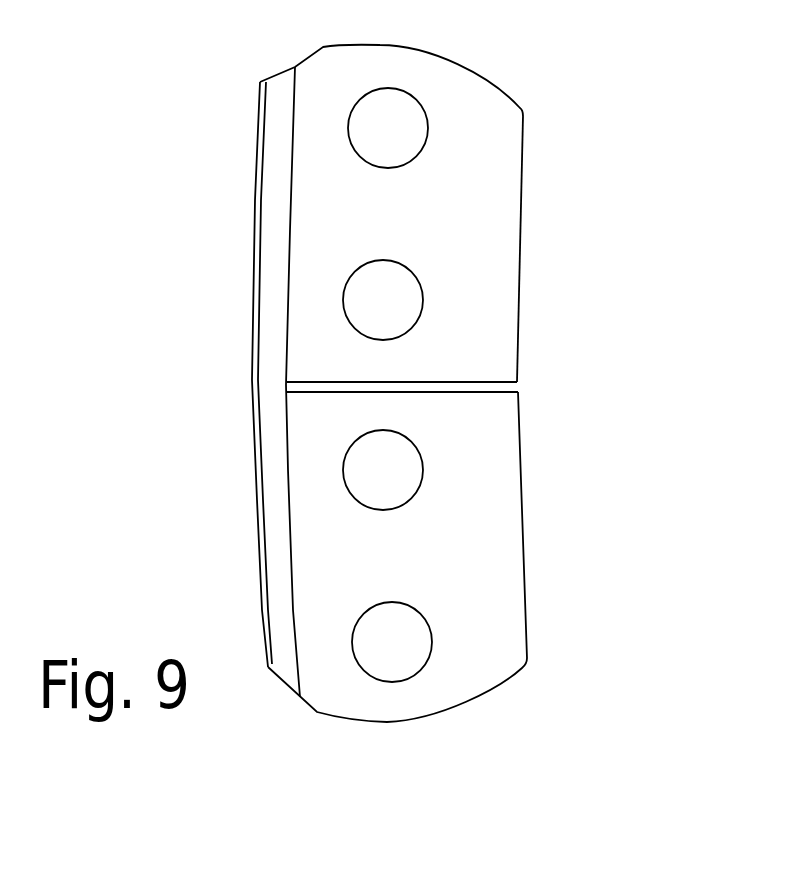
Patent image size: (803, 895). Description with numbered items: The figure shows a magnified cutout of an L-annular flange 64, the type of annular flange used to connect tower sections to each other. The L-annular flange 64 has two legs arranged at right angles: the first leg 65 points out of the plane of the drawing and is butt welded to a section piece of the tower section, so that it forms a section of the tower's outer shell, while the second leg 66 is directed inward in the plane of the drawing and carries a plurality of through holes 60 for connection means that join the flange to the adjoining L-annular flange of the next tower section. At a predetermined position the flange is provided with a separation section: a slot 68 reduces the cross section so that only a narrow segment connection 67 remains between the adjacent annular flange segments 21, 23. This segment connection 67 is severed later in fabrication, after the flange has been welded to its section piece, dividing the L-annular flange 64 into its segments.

The annular flange segment 21 is at (225, 486).
The annular flange segment 23 is at (228, 141).
The through holes 60 is at (365, 283).
The L-annular flange 64 is at (528, 432).
The first leg 65 is at (277, 197).
The second leg 66 is at (495, 143).
The segment connection 67 is at (278, 385).
The slot 68 is at (513, 385).